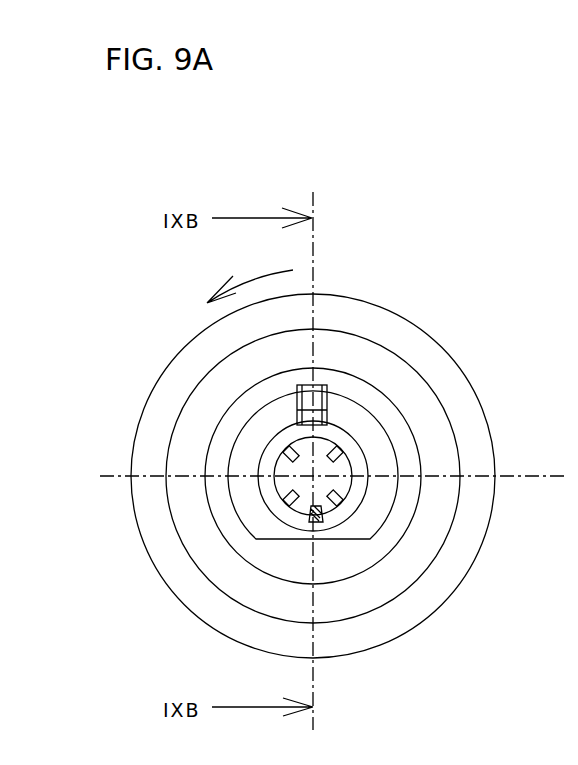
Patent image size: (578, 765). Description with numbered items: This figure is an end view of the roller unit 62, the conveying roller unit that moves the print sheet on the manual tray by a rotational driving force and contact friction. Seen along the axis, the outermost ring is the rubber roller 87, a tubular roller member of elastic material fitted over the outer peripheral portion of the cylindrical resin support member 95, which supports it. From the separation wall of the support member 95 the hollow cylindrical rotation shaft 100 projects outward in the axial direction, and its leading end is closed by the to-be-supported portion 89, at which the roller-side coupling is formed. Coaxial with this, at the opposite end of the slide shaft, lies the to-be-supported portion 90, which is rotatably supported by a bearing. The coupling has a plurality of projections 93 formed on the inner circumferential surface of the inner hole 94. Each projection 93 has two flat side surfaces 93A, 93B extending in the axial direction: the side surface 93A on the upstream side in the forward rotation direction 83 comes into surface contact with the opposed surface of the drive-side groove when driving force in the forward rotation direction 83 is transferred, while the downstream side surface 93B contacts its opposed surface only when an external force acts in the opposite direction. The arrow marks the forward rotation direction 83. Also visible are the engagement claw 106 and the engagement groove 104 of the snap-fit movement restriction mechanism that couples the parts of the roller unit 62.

The roller unit 62 is at (480, 250).
The forward rotation direction 83 is at (258, 279).
The rubber roller 87 is at (423, 337).
The to-be-supported portion 89 is at (370, 484).
The to-be-supported portion 90 is at (318, 528).
The projection 93 is at (290, 450).
The side surface 93A is at (333, 520).
The side surface 93B is at (322, 528).
The inner hole 94 is at (392, 448).
The support member 95 is at (433, 388).
The rotation shaft 100 is at (230, 455).
The engagement groove 104 is at (318, 386).
The engagement claw 106 is at (315, 386).